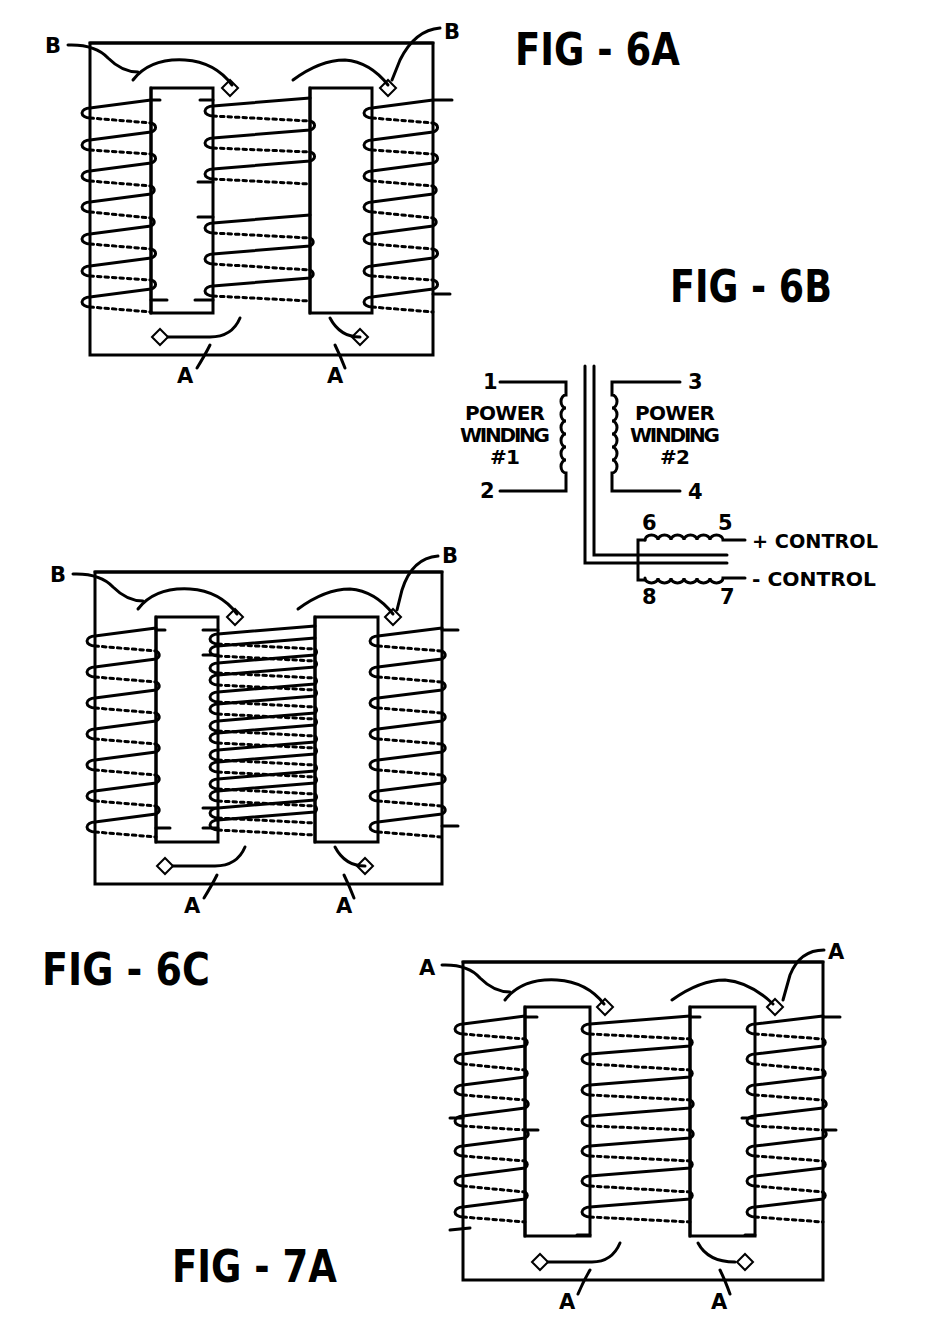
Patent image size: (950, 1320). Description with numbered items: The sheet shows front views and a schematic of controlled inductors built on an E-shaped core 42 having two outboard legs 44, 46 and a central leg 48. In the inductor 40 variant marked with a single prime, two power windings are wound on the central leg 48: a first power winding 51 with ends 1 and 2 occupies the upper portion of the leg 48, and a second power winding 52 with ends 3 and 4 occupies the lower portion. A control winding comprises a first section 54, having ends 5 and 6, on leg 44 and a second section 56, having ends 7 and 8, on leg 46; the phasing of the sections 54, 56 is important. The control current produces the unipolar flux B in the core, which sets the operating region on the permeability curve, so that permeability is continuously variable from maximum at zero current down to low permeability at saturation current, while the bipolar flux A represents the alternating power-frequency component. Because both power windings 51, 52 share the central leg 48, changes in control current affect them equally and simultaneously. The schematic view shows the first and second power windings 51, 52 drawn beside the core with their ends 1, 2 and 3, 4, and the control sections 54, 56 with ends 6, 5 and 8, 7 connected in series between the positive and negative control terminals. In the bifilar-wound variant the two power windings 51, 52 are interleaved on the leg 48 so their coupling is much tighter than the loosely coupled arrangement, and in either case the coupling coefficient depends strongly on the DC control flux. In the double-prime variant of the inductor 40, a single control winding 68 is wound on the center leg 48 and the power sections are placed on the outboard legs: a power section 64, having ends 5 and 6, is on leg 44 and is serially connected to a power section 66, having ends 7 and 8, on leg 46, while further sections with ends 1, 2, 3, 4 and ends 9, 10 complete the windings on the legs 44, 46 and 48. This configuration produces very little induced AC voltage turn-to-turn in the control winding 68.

In FIG. 6A, the resonant inductor 40 is at (358, 26).
In FIG. 6C, the resonant inductor 40 is at (360, 554).
In FIG. 7A, the resonant inductor 40 is at (740, 938).
In FIG. 6A, the E-shaped core 42 is at (135, 348).
In FIG. 6C, the E-shaped core 42 is at (140, 877).
In FIG. 7A, the E-shaped core 42 is at (512, 1270).
In FIG. 6A, the outboard leg 44 is at (112, 316).
In FIG. 6C, the outboard leg 44 is at (116, 844).
In FIG. 7A, the outboard leg 44 is at (485, 1232).
In FIG. 6A, the outboard leg 46 is at (418, 345).
In FIG. 6C, the outboard leg 46 is at (420, 874).
In FIG. 7A, the outboard leg 46 is at (794, 1262).
In FIG. 6A, the central leg 48 is at (240, 318).
In FIG. 6C, the central leg 48 is at (248, 845).
In FIG. 7A, the central leg 48 is at (625, 1240).
In FIG. 6A, the first power winding 51 is at (262, 98).
In FIG. 6B, the first power winding 51 is at (575, 392).
In FIG. 6C, the first power winding 51 is at (265, 628).
In FIG. 6A, the second power winding 52 is at (265, 300).
In FIG. 6B, the second power winding 52 is at (607, 392).
In FIG. 6C, the second power winding 52 is at (272, 820).
In FIG. 6A, the first section of control winding 54 is at (90, 232).
In FIG. 6B, the first section of control winding 54 is at (685, 540).
In FIG. 6C, the first section of control winding 54 is at (95, 762).
In FIG. 6A, the second section of control winding 56 is at (440, 150).
In FIG. 6B, the second section of control winding 56 is at (690, 580).
In FIG. 6C, the second section of control winding 56 is at (449, 677).
In FIG. 7A, the power section 64 is at (465, 1158).
In FIG. 7A, the power section 66 is at (830, 1070).
In FIG. 7A, the control winding 68 is at (628, 1020).
In FIG. 6A, the winding end 1 is at (199, 102).
In FIG. 6C, the winding end 1 is at (203, 632).
In FIG. 7A, the winding end 1 is at (540, 1019).
In FIG. 6A, the winding end 2 is at (197, 183).
In FIG. 6C, the winding end 2 is at (202, 805).
In FIG. 7A, the winding end 2 is at (448, 1119).
In FIG. 6A, the winding end 3 is at (197, 220).
In FIG. 6C, the winding end 3 is at (201, 656).
In FIG. 7A, the winding end 3 is at (741, 1119).
In FIG. 6A, the winding end 4 is at (199, 287).
In FIG. 6C, the winding end 4 is at (202, 828).
In FIG. 7A, the winding end 4 is at (840, 1018).
In FIG. 6A, the winding end 5 is at (164, 287).
In FIG. 6C, the winding end 5 is at (170, 817).
In FIG. 7A, the winding end 5 is at (452, 1229).
In FIG. 6A, the winding end 6 is at (164, 102).
In FIG. 6C, the winding end 6 is at (169, 632).
In FIG. 7A, the winding end 6 is at (540, 1131).
In FIG. 6A, the winding end 7 is at (450, 294).
In FIG. 6C, the winding end 7 is at (458, 820).
In FIG. 7A, the winding end 7 is at (838, 1131).
In FIG. 6A, the winding end 8 is at (450, 89).
In FIG. 6C, the winding end 8 is at (457, 617).
In FIG. 7A, the winding end 8 is at (741, 1226).
In FIG. 7A, the winding terminal 9 is at (704, 1019).
In FIG. 7A, the winding terminal 10 is at (570, 1222).